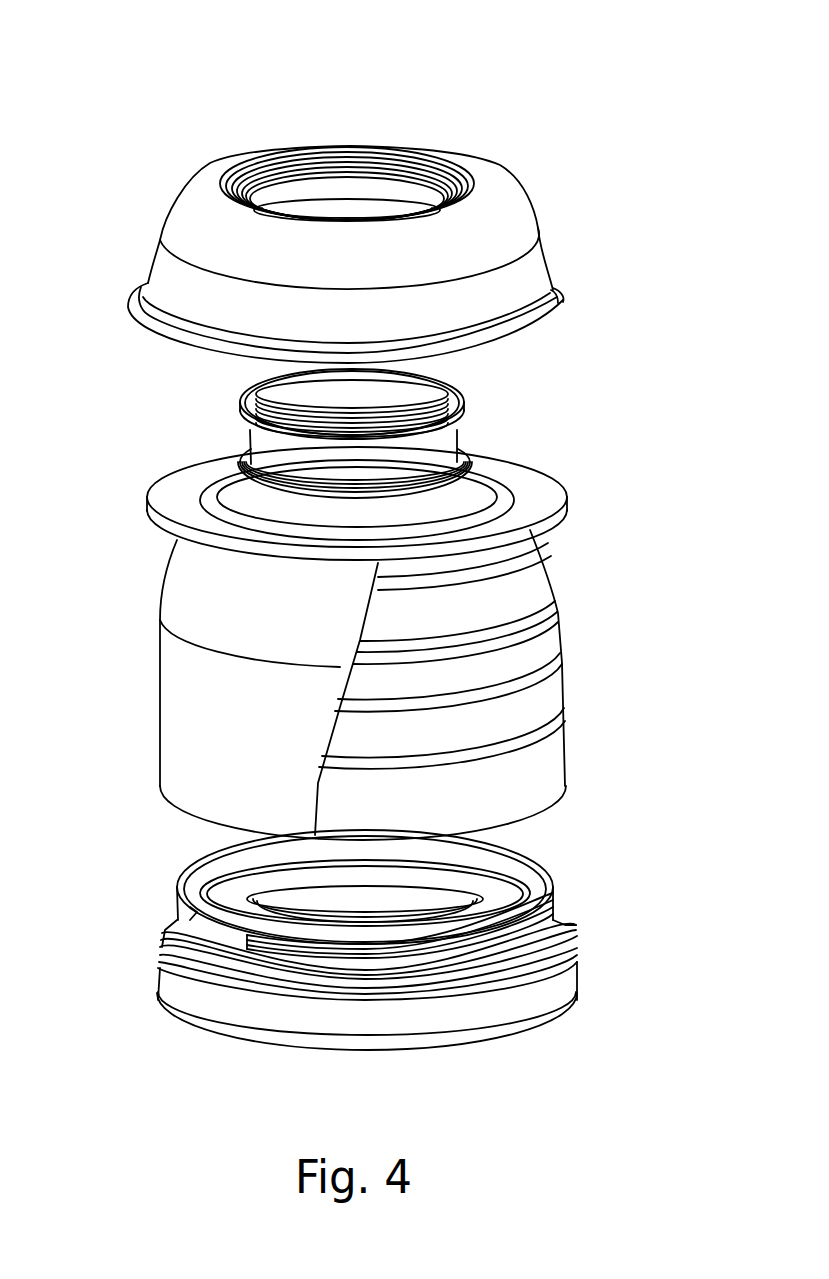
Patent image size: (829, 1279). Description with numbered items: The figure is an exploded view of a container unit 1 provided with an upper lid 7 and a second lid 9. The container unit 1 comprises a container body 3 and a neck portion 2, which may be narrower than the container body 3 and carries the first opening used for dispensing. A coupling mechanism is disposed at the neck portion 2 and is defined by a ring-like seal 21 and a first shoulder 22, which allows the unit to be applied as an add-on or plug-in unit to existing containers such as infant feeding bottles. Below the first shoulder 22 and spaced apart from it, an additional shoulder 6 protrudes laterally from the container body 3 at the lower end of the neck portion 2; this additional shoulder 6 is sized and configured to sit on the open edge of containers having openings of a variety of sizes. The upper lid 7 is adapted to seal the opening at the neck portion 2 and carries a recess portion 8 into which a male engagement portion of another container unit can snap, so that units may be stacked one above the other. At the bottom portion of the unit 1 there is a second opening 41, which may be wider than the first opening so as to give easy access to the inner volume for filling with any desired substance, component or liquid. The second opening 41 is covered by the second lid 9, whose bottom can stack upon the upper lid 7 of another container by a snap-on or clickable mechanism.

The container unit 1 is at (682, 118).
The neck portion 2 is at (245, 432).
The ring-like seal 21 is at (243, 402).
The first shoulder 22 is at (462, 447).
The container body 3 is at (160, 668).
The second opening 41 is at (200, 826).
The additional shoulder 6 is at (153, 488).
The upper lid 7 is at (162, 257).
The recess portion 8 is at (333, 207).
The second lid 9 is at (162, 968).